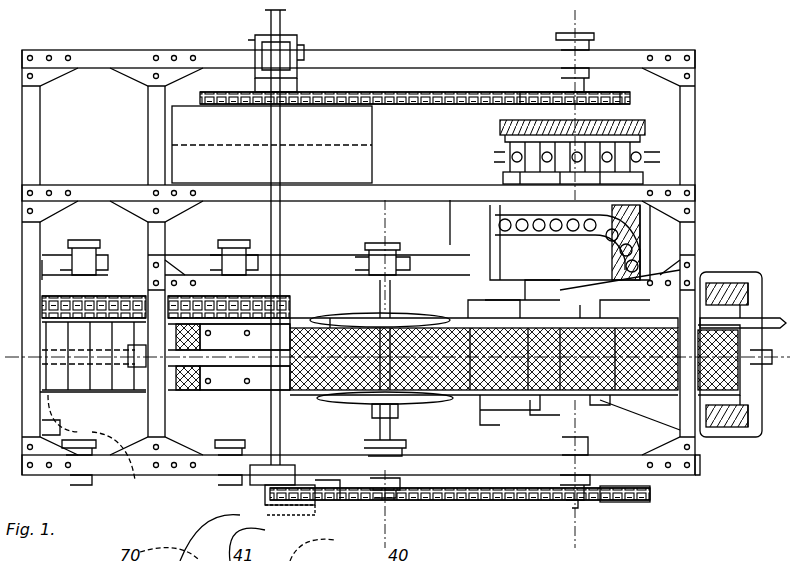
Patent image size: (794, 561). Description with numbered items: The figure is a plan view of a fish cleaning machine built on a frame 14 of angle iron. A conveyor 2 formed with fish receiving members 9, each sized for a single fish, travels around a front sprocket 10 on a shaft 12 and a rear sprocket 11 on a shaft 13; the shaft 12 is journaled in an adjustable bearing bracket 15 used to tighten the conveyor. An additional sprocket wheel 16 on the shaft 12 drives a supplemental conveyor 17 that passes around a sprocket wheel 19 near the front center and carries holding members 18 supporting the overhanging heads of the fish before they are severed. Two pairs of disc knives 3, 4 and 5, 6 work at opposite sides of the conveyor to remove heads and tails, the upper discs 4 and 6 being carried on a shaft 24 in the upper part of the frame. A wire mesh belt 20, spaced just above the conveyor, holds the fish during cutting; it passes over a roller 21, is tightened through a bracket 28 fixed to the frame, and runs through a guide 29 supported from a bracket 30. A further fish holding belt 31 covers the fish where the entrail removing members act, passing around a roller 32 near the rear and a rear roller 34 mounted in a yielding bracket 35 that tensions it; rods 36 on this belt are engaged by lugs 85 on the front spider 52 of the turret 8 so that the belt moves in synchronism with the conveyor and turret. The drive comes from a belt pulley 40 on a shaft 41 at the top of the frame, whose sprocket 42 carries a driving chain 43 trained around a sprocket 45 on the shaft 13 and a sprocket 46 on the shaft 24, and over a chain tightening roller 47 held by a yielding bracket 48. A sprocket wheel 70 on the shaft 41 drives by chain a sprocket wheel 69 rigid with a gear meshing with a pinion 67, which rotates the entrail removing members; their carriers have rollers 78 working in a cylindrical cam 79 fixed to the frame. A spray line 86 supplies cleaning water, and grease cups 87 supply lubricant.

The conveyor 2 is at (140, 388).
The disc knife 3 is at (318, 318).
The disc knife 4 is at (410, 318).
The disc knife 5 is at (575, 15).
The disc knife 6 is at (330, 398).
The turret 8 is at (645, 172).
The fish receiving member 9 is at (85, 380).
The sprocket 10 is at (130, 470).
The sprocket 11 is at (625, 385).
The shaft 12 is at (112, 437).
The shaft 13 is at (560, 505).
The frame 14 is at (698, 475).
The adjustable bearing bracket 15 is at (75, 478).
The sprocket wheel 16 is at (107, 290).
The supplemental conveyor 17 is at (62, 290).
The holding member 18 is at (270, 292).
The sprocket wheel 19 is at (195, 290).
The belt 20 is at (418, 360).
The roller 21 is at (505, 405).
The shaft 24 is at (450, 200).
The bracket 28 is at (215, 370).
The guide 29 is at (240, 370).
The bracket 30 is at (215, 340).
The fish holding belt 31 is at (610, 395).
The roller 32 is at (548, 405).
The rear roller 34 is at (675, 400).
The bracket 35 is at (725, 435).
The rod 36 is at (670, 385).
The belt pulley 40 is at (372, 133).
The shaft 41 is at (282, 200).
The sprocket 42 is at (290, 492).
The driving chain 43 is at (455, 498).
The sprocket 45 is at (630, 500).
The sprocket 46 is at (430, 500).
The chain tightening roller 47 is at (297, 492).
The bracket 48 is at (325, 485).
The spider 52 is at (600, 305).
The pinion 67 is at (647, 127).
The sprocket wheel 69 is at (640, 92).
The sprocket wheel 70 is at (330, 92).
The roller 78 is at (555, 228).
The cylindrical cam 79 is at (640, 228).
The lug 85 is at (630, 300).
The spray line 86 is at (773, 318).
The grease cup 87 is at (648, 154).